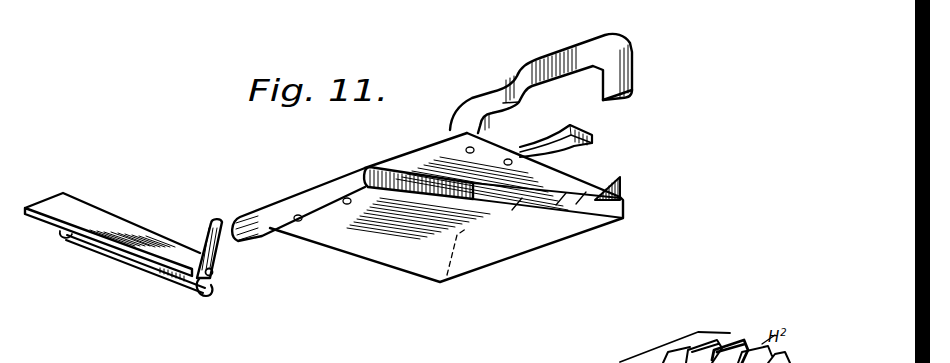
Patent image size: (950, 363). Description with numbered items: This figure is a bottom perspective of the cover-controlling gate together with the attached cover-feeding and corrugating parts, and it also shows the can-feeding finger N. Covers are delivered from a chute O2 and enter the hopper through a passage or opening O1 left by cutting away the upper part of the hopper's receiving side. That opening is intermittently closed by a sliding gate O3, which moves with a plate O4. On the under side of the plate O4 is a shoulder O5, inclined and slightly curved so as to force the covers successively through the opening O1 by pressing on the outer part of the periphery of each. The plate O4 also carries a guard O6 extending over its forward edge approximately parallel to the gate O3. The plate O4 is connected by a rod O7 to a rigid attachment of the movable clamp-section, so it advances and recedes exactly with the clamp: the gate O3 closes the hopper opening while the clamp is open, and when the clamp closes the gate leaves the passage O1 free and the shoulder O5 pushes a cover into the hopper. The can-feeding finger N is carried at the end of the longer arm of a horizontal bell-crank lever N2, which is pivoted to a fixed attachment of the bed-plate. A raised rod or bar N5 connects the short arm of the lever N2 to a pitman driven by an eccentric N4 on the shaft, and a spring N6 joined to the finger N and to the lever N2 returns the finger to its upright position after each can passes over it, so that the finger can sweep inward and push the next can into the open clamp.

The plate O4 is at (503, 258).
The rod O7 is at (285, 198).
The shoulder O5 is at (393, 170).
The sliding gate O3 is at (541, 73).
The chute O2 is at (631, 79).
The passage or opening O1 is at (570, 79).
The guard O6 is at (596, 142).
The horizontal bell-crank lever N2 is at (113, 223).
The can-feeding finger N is at (221, 258).
The eccentric N4 is at (214, 277).
The raised rod or bar N5 is at (212, 286).
The spring N6 is at (170, 282).